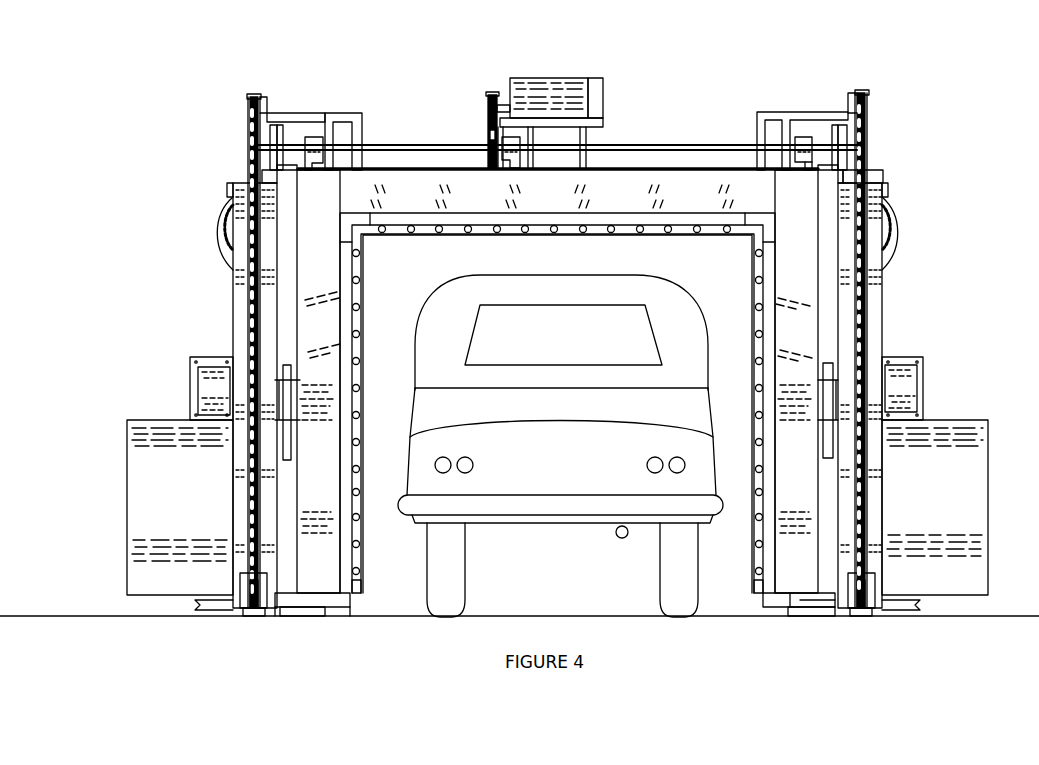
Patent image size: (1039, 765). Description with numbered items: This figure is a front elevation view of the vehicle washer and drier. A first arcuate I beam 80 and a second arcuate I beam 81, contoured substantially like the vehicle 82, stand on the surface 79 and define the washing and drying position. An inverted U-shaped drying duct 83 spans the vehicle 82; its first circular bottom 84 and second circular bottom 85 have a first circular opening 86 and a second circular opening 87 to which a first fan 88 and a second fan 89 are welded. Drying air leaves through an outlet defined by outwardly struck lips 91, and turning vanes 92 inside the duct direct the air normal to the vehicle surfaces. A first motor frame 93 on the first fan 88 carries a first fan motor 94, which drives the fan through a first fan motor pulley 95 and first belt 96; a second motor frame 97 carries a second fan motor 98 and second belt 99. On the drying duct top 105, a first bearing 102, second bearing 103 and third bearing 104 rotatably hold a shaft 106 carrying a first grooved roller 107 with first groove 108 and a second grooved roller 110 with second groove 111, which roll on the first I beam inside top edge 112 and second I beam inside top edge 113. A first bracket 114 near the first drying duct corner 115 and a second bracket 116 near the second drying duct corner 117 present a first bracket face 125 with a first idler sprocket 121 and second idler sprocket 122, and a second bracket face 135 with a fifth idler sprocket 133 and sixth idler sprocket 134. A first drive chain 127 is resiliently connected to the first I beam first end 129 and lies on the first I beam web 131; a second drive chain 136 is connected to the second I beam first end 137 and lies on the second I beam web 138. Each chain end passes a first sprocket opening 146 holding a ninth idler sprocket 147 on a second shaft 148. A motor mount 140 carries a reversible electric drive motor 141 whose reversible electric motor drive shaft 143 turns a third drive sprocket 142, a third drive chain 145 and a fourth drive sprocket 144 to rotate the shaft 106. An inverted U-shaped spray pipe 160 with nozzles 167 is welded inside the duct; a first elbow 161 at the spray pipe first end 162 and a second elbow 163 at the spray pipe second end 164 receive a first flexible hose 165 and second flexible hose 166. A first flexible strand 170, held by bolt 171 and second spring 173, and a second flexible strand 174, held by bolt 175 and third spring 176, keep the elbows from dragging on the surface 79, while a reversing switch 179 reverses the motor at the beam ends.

The surface 79 is at (578, 618).
The first arcuate I beam 80 is at (882, 307).
The second arcuate I beam 81 is at (233, 295).
The vehicle 82 is at (700, 307).
The inverted U-shaped drying duct 83 is at (774, 376).
The first circular bottom 84 is at (800, 608).
The second circular bottom 85 is at (318, 616).
The first circular opening 86 is at (776, 507).
The second circular opening 87 is at (298, 527).
The first fan 88 is at (988, 447).
The second fan 89 is at (127, 465).
The outwardly struck lips 91 is at (754, 327).
The turning vanes 92 is at (786, 350).
The first motor frame 93 is at (923, 390).
The first fan motor 94 is at (923, 365).
The first fan motor pulley 95 is at (823, 383).
The first belt 96 is at (820, 424).
The second motor frame 97 is at (190, 362).
The second fan motor 98 is at (198, 392).
The second belt 99 is at (289, 456).
The first bearing 102 is at (805, 138).
The second bearing 103 is at (513, 168).
The third bearing 104 is at (336, 128).
The drying duct top 105 is at (438, 167).
The shaft 106 is at (395, 146).
The first grooved roller 107 is at (834, 131).
The first groove 108 is at (843, 125).
The second grooved roller 110 is at (282, 138).
The second groove 111 is at (274, 128).
The first I beam inside top edge 112 is at (838, 170).
The second I beam inside top edge 113 is at (284, 170).
The first bracket 114 is at (757, 127).
The first drying duct corner 115 is at (811, 170).
The second bracket 116 is at (362, 115).
The second drying duct corner 117 is at (306, 170).
The first idler sprocket 121 is at (868, 146).
The second idler sprocket 122 is at (868, 110).
The first bracket face 125 is at (858, 97).
The first drive chain 127 is at (866, 334).
The first I beam first end 129 is at (882, 522).
The first I beam web 131 is at (860, 182).
The fifth idler sprocket 133 is at (260, 150).
The sixth idler sprocket 134 is at (252, 118).
The second bracket face 135 is at (262, 100).
The second drive chain 136 is at (256, 315).
The second I beam first end 137 is at (233, 545).
The second I beam web 138 is at (262, 170).
The motor mount 140 is at (603, 123).
The reversible electric drive motor 141 is at (565, 78).
The third drive sprocket 142 is at (490, 92).
The reversible electric motor drive shaft 143 is at (503, 105).
The fourth drive sprocket 144 is at (489, 150).
The third drive chain 145 is at (489, 122).
The first sprocket opening 146 is at (845, 614).
The ninth idler sprocket 147 is at (868, 590).
The second shaft 148 is at (850, 606).
The inverted U-shaped spray pipe 160 is at (757, 410).
The first elbow 161 is at (763, 602).
The spray pipe first end 162 is at (765, 577).
The second elbow 163 is at (352, 602).
The spray pipe second end 164 is at (358, 532).
The first flexible hose 165 is at (822, 612).
The second flexible hose 166 is at (300, 606).
The nozzles 167 is at (760, 494).
The first flexible strand 170 is at (893, 232).
The bolt 171 is at (888, 187).
The second spring 173 is at (893, 210).
The second flexible strand 174 is at (222, 234).
The bolt 175 is at (227, 189).
The third spring 176 is at (225, 210).
The reversing switch 179 is at (845, 190).